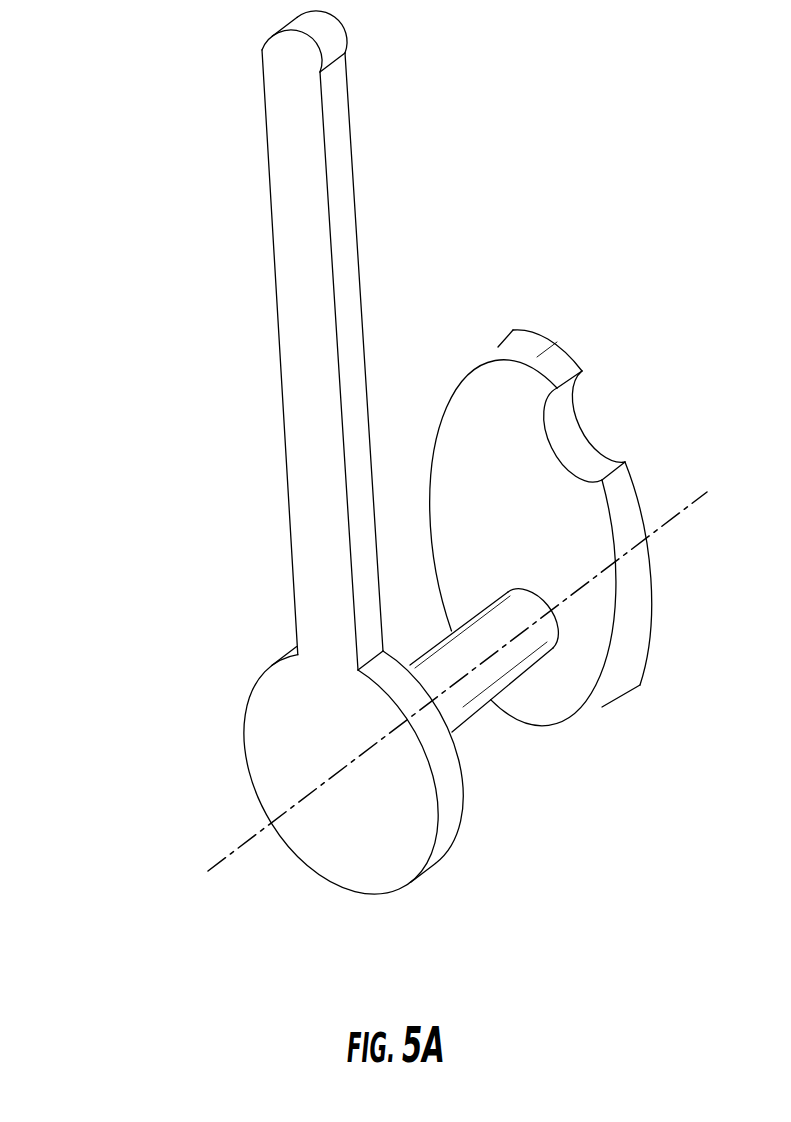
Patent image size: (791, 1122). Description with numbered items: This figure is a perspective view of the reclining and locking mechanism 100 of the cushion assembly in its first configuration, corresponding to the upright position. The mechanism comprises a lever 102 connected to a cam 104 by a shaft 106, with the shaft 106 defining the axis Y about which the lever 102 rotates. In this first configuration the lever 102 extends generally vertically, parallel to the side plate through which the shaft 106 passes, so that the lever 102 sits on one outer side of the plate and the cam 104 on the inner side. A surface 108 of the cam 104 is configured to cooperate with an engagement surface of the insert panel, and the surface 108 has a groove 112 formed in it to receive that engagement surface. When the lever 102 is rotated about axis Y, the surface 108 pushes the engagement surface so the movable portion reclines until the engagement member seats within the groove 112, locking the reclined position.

The reclining and locking mechanism 100 is at (100, 106).
The lever 102 is at (310, 384).
The cam 104 is at (590, 637).
The shaft 106 is at (462, 632).
The surface 108 is at (640, 578).
The groove 112 is at (588, 425).